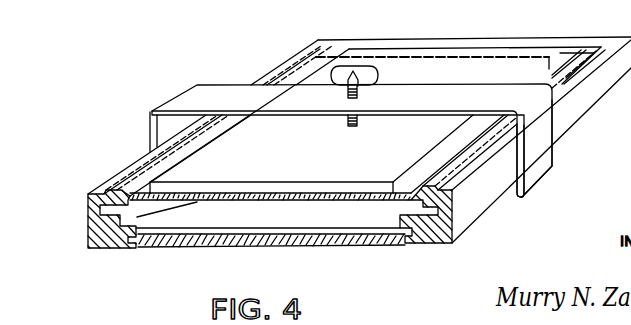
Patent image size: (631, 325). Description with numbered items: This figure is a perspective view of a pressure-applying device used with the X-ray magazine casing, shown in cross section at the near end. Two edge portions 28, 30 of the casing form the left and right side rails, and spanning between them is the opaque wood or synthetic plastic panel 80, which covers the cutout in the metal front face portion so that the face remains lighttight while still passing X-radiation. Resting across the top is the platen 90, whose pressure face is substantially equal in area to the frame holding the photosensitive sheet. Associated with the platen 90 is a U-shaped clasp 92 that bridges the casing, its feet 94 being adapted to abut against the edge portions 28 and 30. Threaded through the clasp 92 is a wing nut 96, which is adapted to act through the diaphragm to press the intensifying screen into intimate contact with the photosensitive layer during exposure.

The edge portion 28 is at (102, 230).
The edge portion 30 is at (436, 227).
The opaque panel 80 is at (240, 246).
The platen 90 is at (359, 162).
The U-shaped clasp 92 is at (182, 102).
The feet 94 is at (510, 198).
The wing nut 96 is at (374, 70).